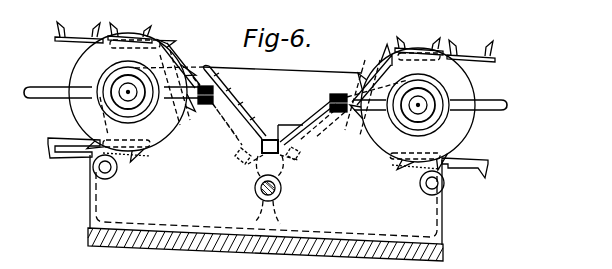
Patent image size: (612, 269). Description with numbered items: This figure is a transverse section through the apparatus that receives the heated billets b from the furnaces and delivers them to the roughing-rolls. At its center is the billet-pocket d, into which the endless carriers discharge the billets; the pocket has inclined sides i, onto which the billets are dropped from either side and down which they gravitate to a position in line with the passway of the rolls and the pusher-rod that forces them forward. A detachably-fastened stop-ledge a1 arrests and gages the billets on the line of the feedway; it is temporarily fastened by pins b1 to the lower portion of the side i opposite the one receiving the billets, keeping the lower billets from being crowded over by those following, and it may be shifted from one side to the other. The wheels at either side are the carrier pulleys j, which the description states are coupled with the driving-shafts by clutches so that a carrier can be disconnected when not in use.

The cutter wheel j is at (67, 113).
The billet-pocket d is at (244, 72).
The billets b is at (250, 118).
The stop-ledge a1 is at (296, 125).
The inclined sides i is at (238, 123).
The pins b1 is at (298, 157).